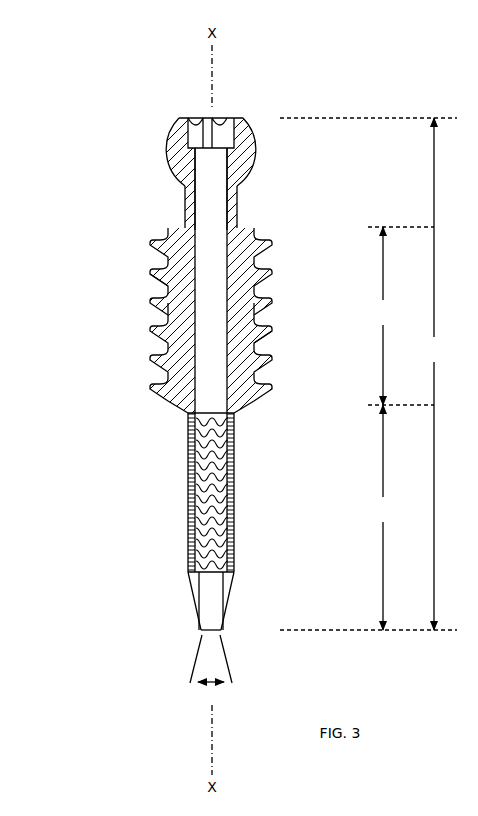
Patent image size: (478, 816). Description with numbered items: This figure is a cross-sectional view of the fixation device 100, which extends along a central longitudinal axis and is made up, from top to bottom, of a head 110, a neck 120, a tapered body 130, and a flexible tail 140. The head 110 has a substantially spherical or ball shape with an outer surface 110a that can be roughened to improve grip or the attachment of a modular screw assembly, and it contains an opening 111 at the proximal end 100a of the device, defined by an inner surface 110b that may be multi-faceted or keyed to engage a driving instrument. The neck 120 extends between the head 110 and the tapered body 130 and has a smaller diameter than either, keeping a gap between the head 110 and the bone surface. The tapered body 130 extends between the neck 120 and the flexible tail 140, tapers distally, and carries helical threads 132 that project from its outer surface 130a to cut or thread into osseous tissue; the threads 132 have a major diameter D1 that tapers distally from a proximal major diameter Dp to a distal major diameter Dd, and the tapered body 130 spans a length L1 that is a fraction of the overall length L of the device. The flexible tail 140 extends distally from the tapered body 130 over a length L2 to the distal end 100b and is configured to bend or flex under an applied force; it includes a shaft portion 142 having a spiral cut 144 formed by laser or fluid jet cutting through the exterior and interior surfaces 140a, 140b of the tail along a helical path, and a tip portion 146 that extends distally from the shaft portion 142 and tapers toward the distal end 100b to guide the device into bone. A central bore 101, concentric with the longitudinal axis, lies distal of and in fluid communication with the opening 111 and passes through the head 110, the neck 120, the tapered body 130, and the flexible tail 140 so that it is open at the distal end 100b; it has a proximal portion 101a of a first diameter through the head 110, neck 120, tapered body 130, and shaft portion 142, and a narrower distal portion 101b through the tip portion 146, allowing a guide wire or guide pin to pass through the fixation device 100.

The fixation device 100 is at (117, 125).
The proximal end 100a is at (237, 120).
The distal end 100b is at (205, 630).
The central bore 101 is at (218, 280).
The proximal portion 101a is at (210, 215).
The distal portion 101b is at (210, 610).
The head 110 is at (186, 130).
The outer surface 110a is at (168, 157).
The inner surface 110b is at (225, 135).
The opening 111 is at (203, 130).
The neck 120 is at (238, 195).
The tapered body 130 is at (201, 314).
The outer surface 130a is at (252, 322).
The helical threads 132 is at (150, 288).
The flexible tail 140 is at (183, 523).
The exterior surface 140a is at (235, 475).
The interior surface 140b is at (233, 405).
The shaft portion 142 is at (188, 520).
The cut 144 is at (235, 415).
The tip portion 146 is at (223, 609).
The major diameter proximal Dp is at (312, 243).
The major diameter D1 is at (300, 302).
The major diameter distal Dd is at (312, 388).
The overall length L is at (368, 374).
The length of tapered body L1 is at (401, 316).
The length of flexible tail L2 is at (383, 517).